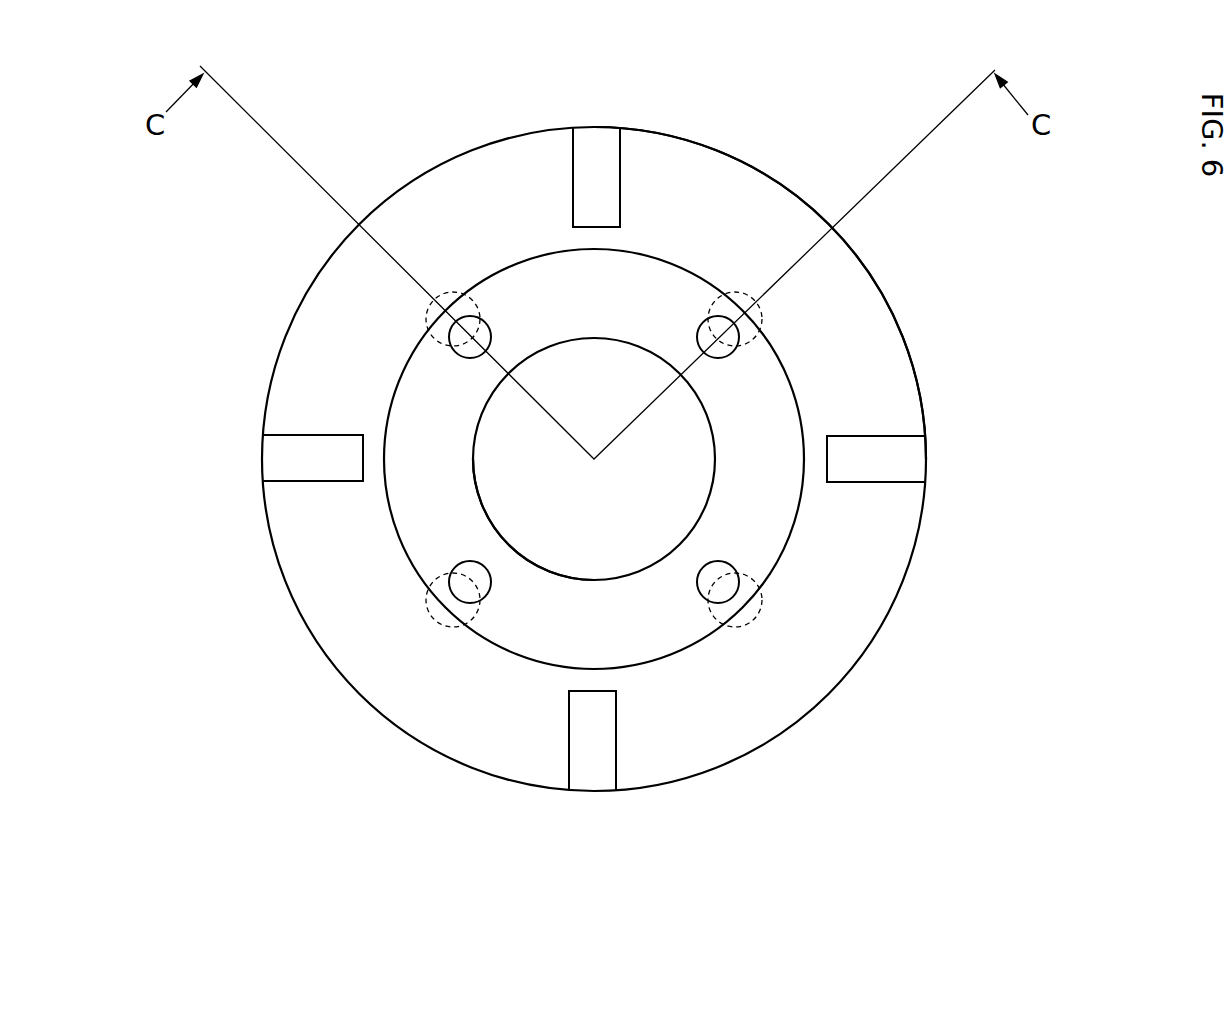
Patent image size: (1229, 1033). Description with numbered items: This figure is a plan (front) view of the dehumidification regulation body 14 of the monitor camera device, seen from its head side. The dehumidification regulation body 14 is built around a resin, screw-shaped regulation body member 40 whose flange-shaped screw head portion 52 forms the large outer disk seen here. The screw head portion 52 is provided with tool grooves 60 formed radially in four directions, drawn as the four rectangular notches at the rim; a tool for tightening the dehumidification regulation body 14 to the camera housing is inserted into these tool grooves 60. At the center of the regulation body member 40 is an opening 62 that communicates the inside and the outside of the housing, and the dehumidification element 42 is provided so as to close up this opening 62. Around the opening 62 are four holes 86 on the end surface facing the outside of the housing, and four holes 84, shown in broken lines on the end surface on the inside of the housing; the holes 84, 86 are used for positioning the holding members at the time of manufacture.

The dehumidification regulation body 14 is at (1072, 138).
The regulation body member 40 is at (902, 301).
The dehumidification element 42 is at (672, 436).
The screw head portion 52 is at (824, 674).
The tool grooves 60 is at (598, 133).
The opening 62 is at (594, 580).
The holes 84 is at (428, 320).
The holes 86 is at (487, 316).